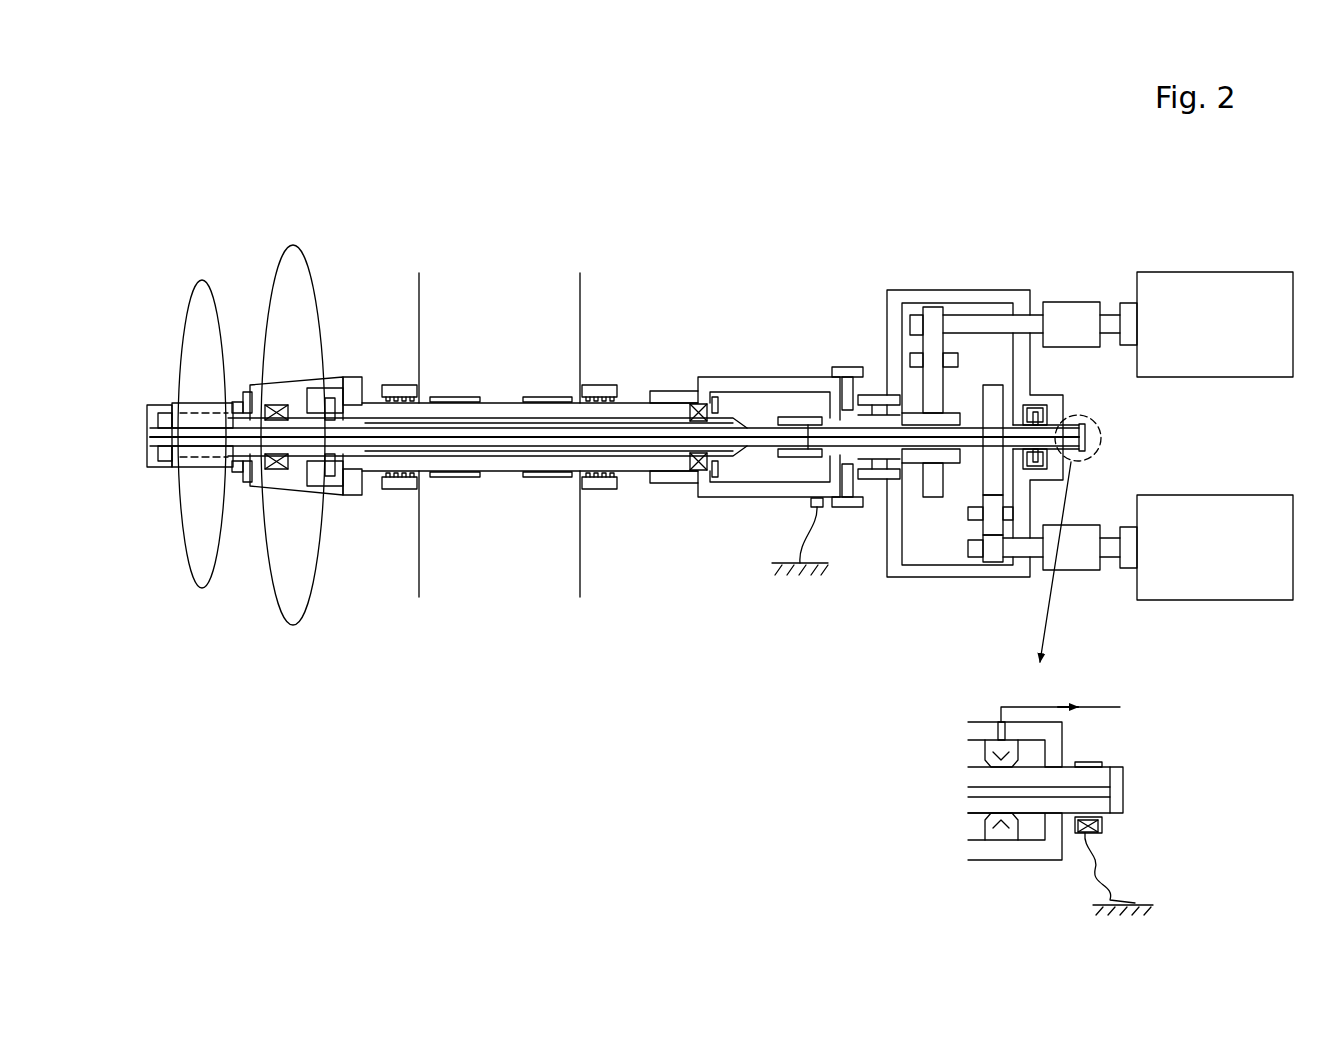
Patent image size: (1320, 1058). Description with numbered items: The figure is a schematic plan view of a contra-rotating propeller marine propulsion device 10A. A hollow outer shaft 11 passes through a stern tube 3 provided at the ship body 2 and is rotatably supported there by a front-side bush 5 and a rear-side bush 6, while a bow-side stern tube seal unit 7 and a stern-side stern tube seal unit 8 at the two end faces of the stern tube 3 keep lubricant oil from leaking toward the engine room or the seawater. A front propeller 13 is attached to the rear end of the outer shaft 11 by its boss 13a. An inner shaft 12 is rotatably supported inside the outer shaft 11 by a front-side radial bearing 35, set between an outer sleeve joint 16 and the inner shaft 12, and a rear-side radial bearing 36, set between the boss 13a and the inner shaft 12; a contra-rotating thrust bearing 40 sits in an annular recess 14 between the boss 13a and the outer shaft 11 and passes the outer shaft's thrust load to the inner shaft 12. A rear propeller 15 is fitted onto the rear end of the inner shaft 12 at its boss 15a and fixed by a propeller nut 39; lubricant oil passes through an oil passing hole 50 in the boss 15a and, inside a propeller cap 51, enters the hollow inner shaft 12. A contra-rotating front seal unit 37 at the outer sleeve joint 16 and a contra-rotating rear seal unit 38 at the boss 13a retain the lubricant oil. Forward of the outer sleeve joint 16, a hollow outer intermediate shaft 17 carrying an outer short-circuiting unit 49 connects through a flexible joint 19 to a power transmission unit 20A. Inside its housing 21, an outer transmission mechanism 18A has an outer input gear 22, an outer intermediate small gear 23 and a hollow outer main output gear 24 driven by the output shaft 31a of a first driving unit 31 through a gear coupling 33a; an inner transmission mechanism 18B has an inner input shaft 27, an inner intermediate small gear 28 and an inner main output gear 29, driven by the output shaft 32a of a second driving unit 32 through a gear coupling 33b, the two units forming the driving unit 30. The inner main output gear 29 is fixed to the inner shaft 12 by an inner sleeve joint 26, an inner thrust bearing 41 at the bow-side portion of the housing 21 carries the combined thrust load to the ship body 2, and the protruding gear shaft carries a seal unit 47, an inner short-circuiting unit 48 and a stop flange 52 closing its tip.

The ship body 2 is at (583, 318).
The stern tube 3 is at (515, 396).
The front-side bush 5 is at (535, 478).
The rear-side bush 6 is at (455, 478).
The bow-side stern tube seal unit 7 is at (600, 386).
The stern-side stern tube seal unit 8 is at (400, 386).
The contra-rotating propeller marine propulsion device 10A is at (665, 193).
The outer shaft 11 is at (635, 408).
The inner shaft 12 is at (618, 440).
The front propeller 13 is at (305, 247).
The boss 13a is at (331, 378).
The annular recess 14 is at (357, 468).
The rear propeller 15 is at (201, 283).
The boss 15a is at (178, 400).
The outer sleeve joint 16 is at (683, 390).
The outer intermediate shaft 17 is at (720, 376).
The outer transmission mechanism 18A is at (908, 338).
The inner transmission mechanism 18B is at (953, 517).
The flexible joint 19 is at (879, 391).
The power transmission unit 20A is at (930, 283).
The housing 21 is at (962, 298).
The outer input gear 22 is at (925, 311).
The outer intermediate small gear 23 is at (944, 376).
The outer main output gear 24 is at (924, 492).
The inner sleeve joint 26 is at (788, 452).
The inner input shaft 27 is at (987, 560).
The inner intermediate small gear 28 is at (985, 523).
The inner main output gear 29 is at (988, 465).
The driving unit 30 is at (1208, 243).
The first driving unit 31 is at (1225, 281).
The output shaft 31a is at (1113, 316).
The second driving unit 32 is at (1225, 512).
The output shaft 32a is at (1108, 538).
The gear coupling 33a is at (1060, 305).
The gear coupling 33b is at (1083, 566).
The front-side radial bearing 35 is at (698, 472).
The rear-side radial bearing 36 is at (270, 403).
The contra-rotating front seal unit 37 is at (722, 473).
The contra-rotating rear seal unit 38 is at (238, 480).
The propeller nut 39 is at (168, 462).
The contra-rotating thrust bearing 40 is at (334, 480).
The inner thrust bearing 41 is at (1051, 416).
The seal unit 47 is at (1020, 752).
The inner short-circuiting unit 48 is at (1109, 838).
The outer short-circuiting unit 49 is at (822, 519).
The oil passing hole 50 is at (188, 458).
The propeller cap 51 is at (148, 432).
The stop flange 52 is at (1117, 790).